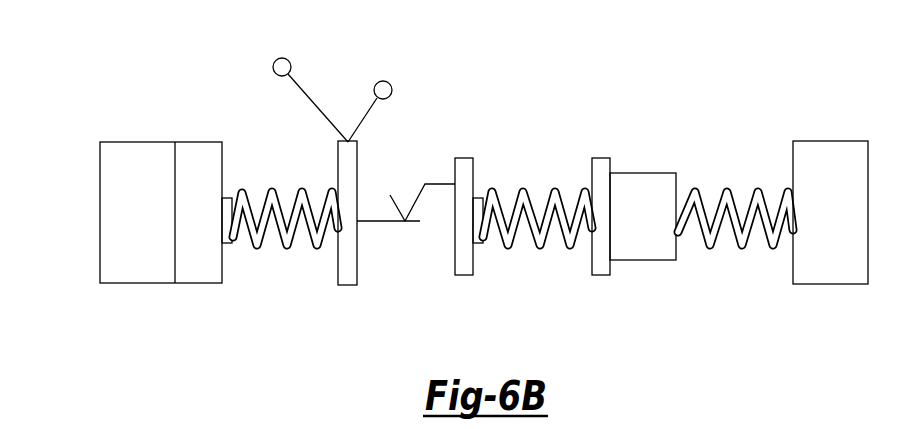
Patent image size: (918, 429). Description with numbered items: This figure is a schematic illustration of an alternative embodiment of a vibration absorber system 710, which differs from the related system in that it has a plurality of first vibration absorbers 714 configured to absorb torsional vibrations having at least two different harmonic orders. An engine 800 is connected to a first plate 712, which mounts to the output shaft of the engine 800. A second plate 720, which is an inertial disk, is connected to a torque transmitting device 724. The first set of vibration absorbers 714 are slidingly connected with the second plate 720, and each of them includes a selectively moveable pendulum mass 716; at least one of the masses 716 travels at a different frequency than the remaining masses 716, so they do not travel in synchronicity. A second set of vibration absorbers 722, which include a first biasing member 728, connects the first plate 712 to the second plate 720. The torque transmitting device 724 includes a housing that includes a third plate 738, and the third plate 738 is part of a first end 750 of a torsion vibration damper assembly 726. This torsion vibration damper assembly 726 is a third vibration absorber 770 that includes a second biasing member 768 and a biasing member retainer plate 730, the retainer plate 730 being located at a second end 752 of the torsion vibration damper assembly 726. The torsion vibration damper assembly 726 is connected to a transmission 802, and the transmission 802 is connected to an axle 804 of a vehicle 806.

The vibration absorber system 710 is at (362, 184).
The first plate 712 is at (207, 239).
The first vibration absorbers 714 is at (332, 97).
The pendulum mass 716 is at (329, 63).
The second plate 720 is at (332, 240).
The second set of vibration absorbers 722 is at (280, 201).
The torque transmitting device 724 is at (406, 171).
The torsion vibration damper assembly 726 is at (532, 200).
The first biasing member 728 is at (285, 245).
The biasing member retainer plate 730 is at (584, 245).
The third plate 738 is at (448, 240).
The first end 750 is at (471, 206).
The second end 752 is at (657, 230).
The second biasing member 768 is at (537, 245).
The third vibration absorber 770 is at (593, 219).
The engine 800 is at (149, 232).
The transmission 802 is at (657, 193).
The axle 804 is at (735, 190).
The vehicle 806 is at (831, 188).